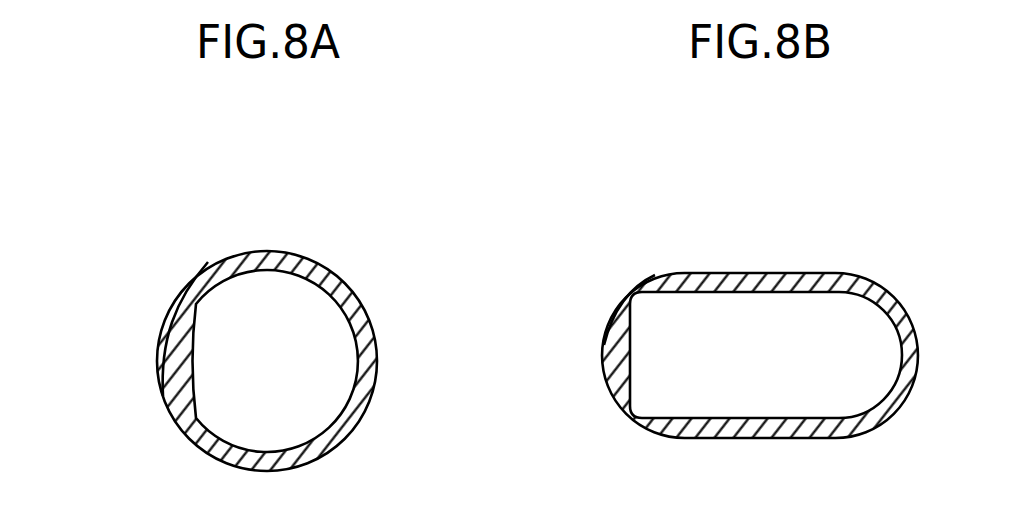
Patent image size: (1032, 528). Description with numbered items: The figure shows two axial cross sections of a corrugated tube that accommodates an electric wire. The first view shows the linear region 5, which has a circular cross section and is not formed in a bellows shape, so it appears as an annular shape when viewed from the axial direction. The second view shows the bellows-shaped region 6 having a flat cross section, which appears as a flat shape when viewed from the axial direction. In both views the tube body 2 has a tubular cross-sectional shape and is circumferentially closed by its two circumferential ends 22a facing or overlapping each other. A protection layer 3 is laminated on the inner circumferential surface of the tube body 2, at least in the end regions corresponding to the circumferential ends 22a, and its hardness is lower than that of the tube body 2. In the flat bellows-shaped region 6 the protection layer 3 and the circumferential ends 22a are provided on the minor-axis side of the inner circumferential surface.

In FIG. 8A, the tube body 2 is at (211, 264).
In FIG. 8B, the tube body 2 is at (655, 276).
In FIG. 8A, the protection layer 3 is at (193, 363).
In FIG. 8B, the protection layer 3 is at (641, 386).
In FIG. 8A, the linear region 5 is at (346, 205).
In FIG. 8B, the bellows-shaped region having a flat cross section 6 is at (868, 207).
In FIG. 8A, the circumferential end 22a is at (160, 357).
In FIG. 8B, the circumferential end 22a is at (601, 350).